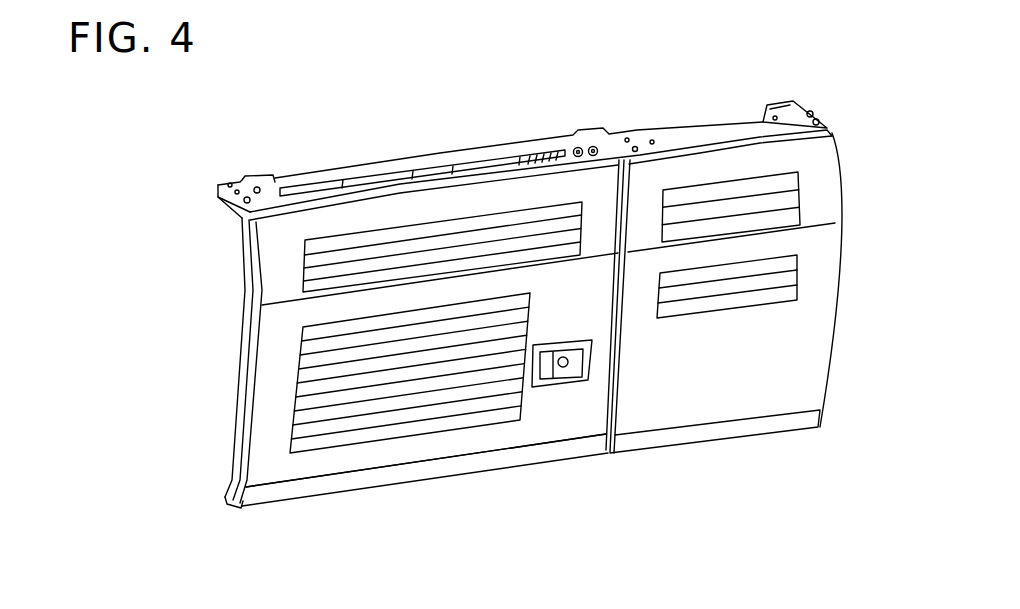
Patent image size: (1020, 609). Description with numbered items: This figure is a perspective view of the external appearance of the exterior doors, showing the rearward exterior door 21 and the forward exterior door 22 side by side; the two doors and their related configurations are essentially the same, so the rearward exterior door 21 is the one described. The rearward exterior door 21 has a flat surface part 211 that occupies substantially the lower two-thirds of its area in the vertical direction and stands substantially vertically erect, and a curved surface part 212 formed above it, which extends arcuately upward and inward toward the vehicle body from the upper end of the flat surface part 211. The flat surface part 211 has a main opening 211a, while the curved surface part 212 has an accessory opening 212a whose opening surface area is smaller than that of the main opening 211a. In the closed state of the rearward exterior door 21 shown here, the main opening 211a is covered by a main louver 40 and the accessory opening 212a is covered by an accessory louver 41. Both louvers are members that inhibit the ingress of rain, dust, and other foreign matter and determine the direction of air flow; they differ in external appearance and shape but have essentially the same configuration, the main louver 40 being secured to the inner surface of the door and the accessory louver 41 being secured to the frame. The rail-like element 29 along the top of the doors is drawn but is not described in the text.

The rearward exterior door 21 is at (230, 433).
The forward exterior door 22 is at (846, 300).
The top rail 29 is at (352, 163).
The main louver 40 is at (480, 401).
The accessory louver 41 is at (417, 245).
The flat surface part 211 is at (415, 450).
The main opening 211a is at (358, 432).
The curved surface part 212 is at (283, 247).
The accessory opening 212a is at (492, 217).